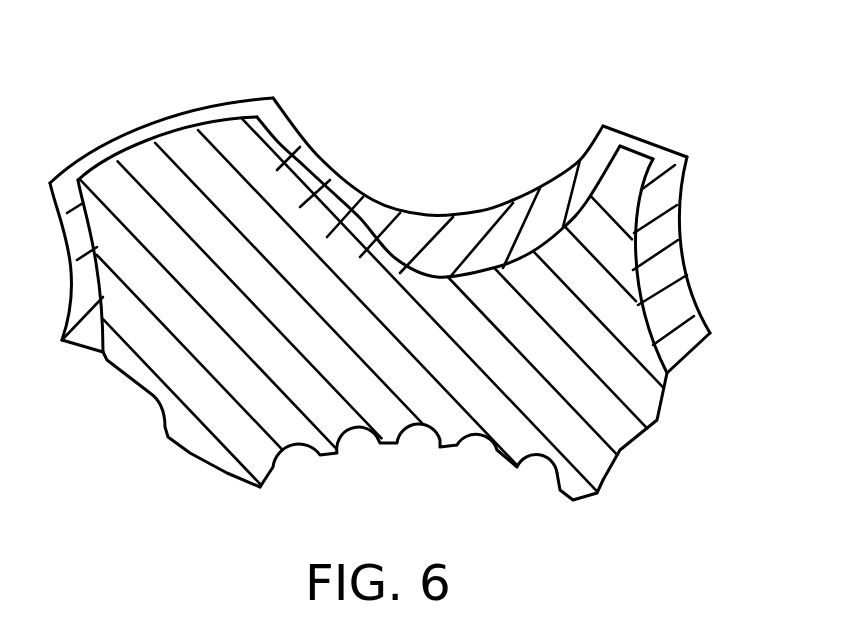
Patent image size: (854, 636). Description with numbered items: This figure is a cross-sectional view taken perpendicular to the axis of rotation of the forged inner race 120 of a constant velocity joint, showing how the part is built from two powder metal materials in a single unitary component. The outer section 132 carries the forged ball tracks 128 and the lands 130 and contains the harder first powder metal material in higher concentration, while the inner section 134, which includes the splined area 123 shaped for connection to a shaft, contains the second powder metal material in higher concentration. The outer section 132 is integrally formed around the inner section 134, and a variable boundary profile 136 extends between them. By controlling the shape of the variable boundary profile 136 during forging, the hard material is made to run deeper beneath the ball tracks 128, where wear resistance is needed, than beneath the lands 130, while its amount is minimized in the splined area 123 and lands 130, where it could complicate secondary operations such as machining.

The forged inner race 120 is at (432, 112).
The splined area 123 is at (557, 472).
The ball tracks 128 is at (443, 214).
The lands 130 is at (147, 131).
The outer section 132 is at (665, 208).
The inner section 134 is at (204, 394).
The variable boundary profile 136 is at (580, 213).